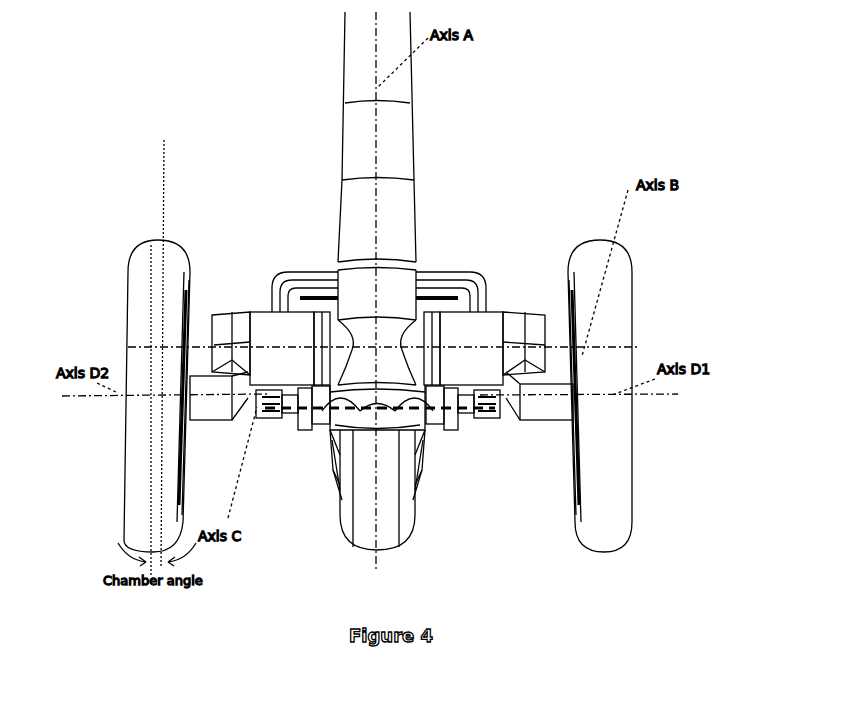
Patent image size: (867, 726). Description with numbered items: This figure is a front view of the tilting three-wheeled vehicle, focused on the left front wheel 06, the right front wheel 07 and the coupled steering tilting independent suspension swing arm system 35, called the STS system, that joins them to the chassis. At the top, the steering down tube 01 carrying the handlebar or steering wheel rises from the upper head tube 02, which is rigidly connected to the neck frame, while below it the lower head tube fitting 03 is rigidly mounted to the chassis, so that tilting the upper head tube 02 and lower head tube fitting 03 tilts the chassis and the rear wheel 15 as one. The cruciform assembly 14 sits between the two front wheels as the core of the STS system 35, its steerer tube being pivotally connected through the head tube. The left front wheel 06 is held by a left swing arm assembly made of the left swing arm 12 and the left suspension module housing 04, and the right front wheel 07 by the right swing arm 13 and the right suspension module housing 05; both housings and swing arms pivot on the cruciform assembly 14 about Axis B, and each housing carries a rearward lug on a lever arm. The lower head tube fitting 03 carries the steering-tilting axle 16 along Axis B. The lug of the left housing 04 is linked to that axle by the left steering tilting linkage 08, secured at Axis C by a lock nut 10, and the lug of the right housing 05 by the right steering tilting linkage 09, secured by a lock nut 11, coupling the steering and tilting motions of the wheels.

The steering down tube 01 is at (385, 237).
The upper head tube 02 is at (395, 298).
The lower head tube fitting 03 is at (402, 445).
The left suspension module housing 04 is at (462, 340).
The right suspension module housing 05 is at (278, 325).
The left front wheel 06 is at (607, 375).
The right front wheel 07 is at (150, 240).
The left steering tilting linkage 08 is at (452, 418).
The right steering tilting linkage 09 is at (305, 418).
The lock nut 10 is at (470, 425).
The lock nut 11 is at (293, 410).
The left swing arm 12 is at (552, 387).
The right swing arm 13 is at (223, 316).
The cruciform assembly 14 is at (377, 352).
The rear wheel 15 is at (378, 500).
The steering-tilting axle 16 is at (333, 465).
The coupled steering tilting independent suspension swing arm system 35 is at (255, 290).